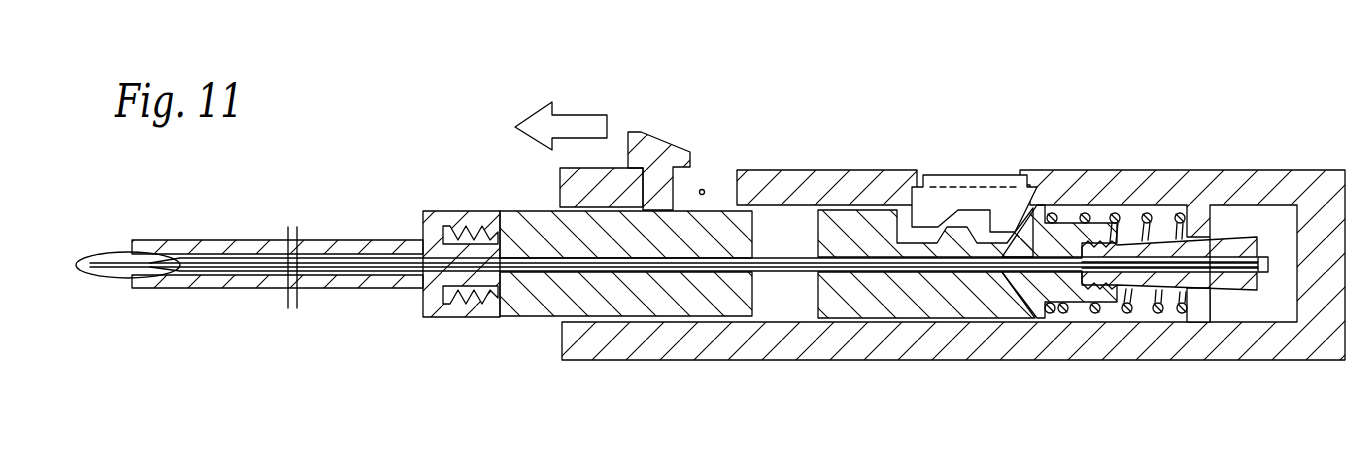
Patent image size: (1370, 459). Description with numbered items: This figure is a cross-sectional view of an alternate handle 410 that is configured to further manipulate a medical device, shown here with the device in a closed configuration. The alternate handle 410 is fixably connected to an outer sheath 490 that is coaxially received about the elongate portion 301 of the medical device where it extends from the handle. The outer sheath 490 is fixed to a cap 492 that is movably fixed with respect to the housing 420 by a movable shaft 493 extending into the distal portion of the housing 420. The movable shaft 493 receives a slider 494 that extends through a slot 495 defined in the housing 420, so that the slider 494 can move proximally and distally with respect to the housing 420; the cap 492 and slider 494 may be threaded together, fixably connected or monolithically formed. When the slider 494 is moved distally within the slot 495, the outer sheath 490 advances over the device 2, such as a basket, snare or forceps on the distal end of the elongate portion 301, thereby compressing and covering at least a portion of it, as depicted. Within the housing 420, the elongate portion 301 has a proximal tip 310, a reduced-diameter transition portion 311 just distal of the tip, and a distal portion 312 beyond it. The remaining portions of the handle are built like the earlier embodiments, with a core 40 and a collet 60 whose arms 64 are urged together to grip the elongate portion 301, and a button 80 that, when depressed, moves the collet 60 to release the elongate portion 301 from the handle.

The device 2 is at (102, 280).
The core 40 is at (1033, 222).
The collet 60 is at (1202, 262).
The arms 64 is at (1240, 282).
The button 80 is at (963, 178).
The elongate portion 301 is at (365, 262).
The proximal tip 310 is at (1263, 270).
The transition portion 311 is at (1157, 263).
The distal portion 312 is at (783, 260).
The alternate handle 410 is at (765, 366).
The housing 420 is at (993, 352).
The outer sheath 490 is at (387, 282).
The cap 492 is at (500, 157).
The movable shaft 493 is at (545, 310).
The slider 494 is at (663, 143).
The slot 495 is at (703, 190).